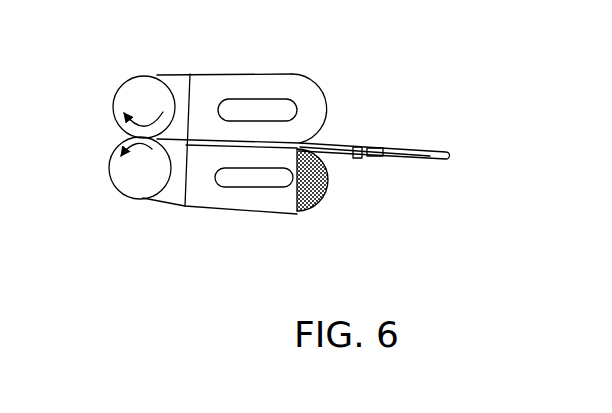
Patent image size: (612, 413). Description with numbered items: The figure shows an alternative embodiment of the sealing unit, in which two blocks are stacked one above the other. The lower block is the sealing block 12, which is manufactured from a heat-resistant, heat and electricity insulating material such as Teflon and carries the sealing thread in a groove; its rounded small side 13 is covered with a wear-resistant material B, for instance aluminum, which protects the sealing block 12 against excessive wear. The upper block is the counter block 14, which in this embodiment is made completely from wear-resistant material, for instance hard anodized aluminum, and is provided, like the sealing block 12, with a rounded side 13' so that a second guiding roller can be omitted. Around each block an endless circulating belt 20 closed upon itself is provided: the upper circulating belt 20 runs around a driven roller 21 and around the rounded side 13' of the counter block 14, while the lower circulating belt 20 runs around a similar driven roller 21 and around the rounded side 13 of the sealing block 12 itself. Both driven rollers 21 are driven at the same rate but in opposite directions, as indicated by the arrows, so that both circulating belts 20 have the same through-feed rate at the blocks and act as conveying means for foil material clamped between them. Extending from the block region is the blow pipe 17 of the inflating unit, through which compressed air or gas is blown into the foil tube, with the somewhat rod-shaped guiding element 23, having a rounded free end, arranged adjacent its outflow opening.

The circulating belt 20 is at (183, 73).
The driven roller 21 is at (156, 84).
The counter block 14 is at (210, 122).
The sealing block 12 is at (207, 178).
The rounded side 13' is at (359, 97).
The rounded side 13 is at (344, 198).
The guiding element 23 is at (428, 153).
The blow pipe 17 is at (357, 158).
The wear-resistant material B is at (310, 214).